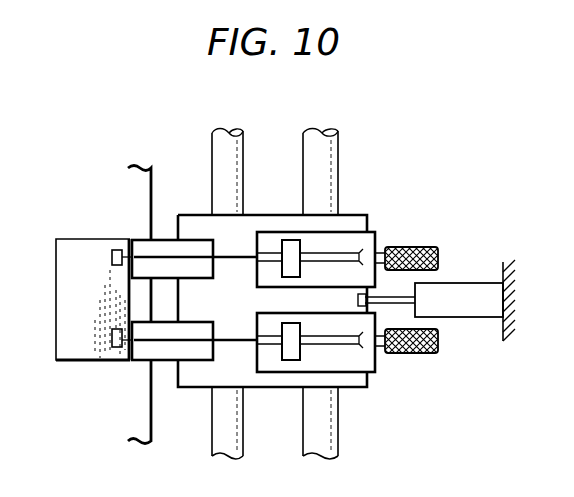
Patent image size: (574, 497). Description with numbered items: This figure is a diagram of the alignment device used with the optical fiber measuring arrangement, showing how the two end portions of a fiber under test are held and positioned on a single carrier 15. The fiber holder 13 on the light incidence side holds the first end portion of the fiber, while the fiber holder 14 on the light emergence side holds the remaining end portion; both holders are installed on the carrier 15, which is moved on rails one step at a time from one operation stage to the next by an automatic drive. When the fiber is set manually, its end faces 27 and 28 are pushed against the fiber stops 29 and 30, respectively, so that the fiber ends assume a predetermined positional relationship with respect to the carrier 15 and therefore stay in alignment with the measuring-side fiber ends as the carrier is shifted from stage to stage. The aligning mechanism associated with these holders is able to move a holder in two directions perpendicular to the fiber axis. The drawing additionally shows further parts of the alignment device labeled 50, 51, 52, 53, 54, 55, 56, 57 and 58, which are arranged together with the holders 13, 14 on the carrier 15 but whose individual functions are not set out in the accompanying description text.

The fiber holder 13 is at (152, 350).
The fiber holder 14 is at (142, 244).
The carrier 15 is at (197, 387).
The end face 27 is at (123, 350).
The end face 28 is at (127, 242).
The fiber stop 29 is at (112, 346).
The fiber stop 30 is at (112, 260).
The guide rod 50 is at (343, 447).
The guide rod 51 is at (244, 447).
The actuator cylinder 52 is at (477, 317).
The lower knurled knob 53 is at (424, 353).
The upper knurled knob 54 is at (425, 247).
The lower housing 55 is at (372, 372).
The upper housing 56 is at (372, 232).
The lower slide block 57 is at (292, 362).
The upper slide block 58 is at (289, 238).